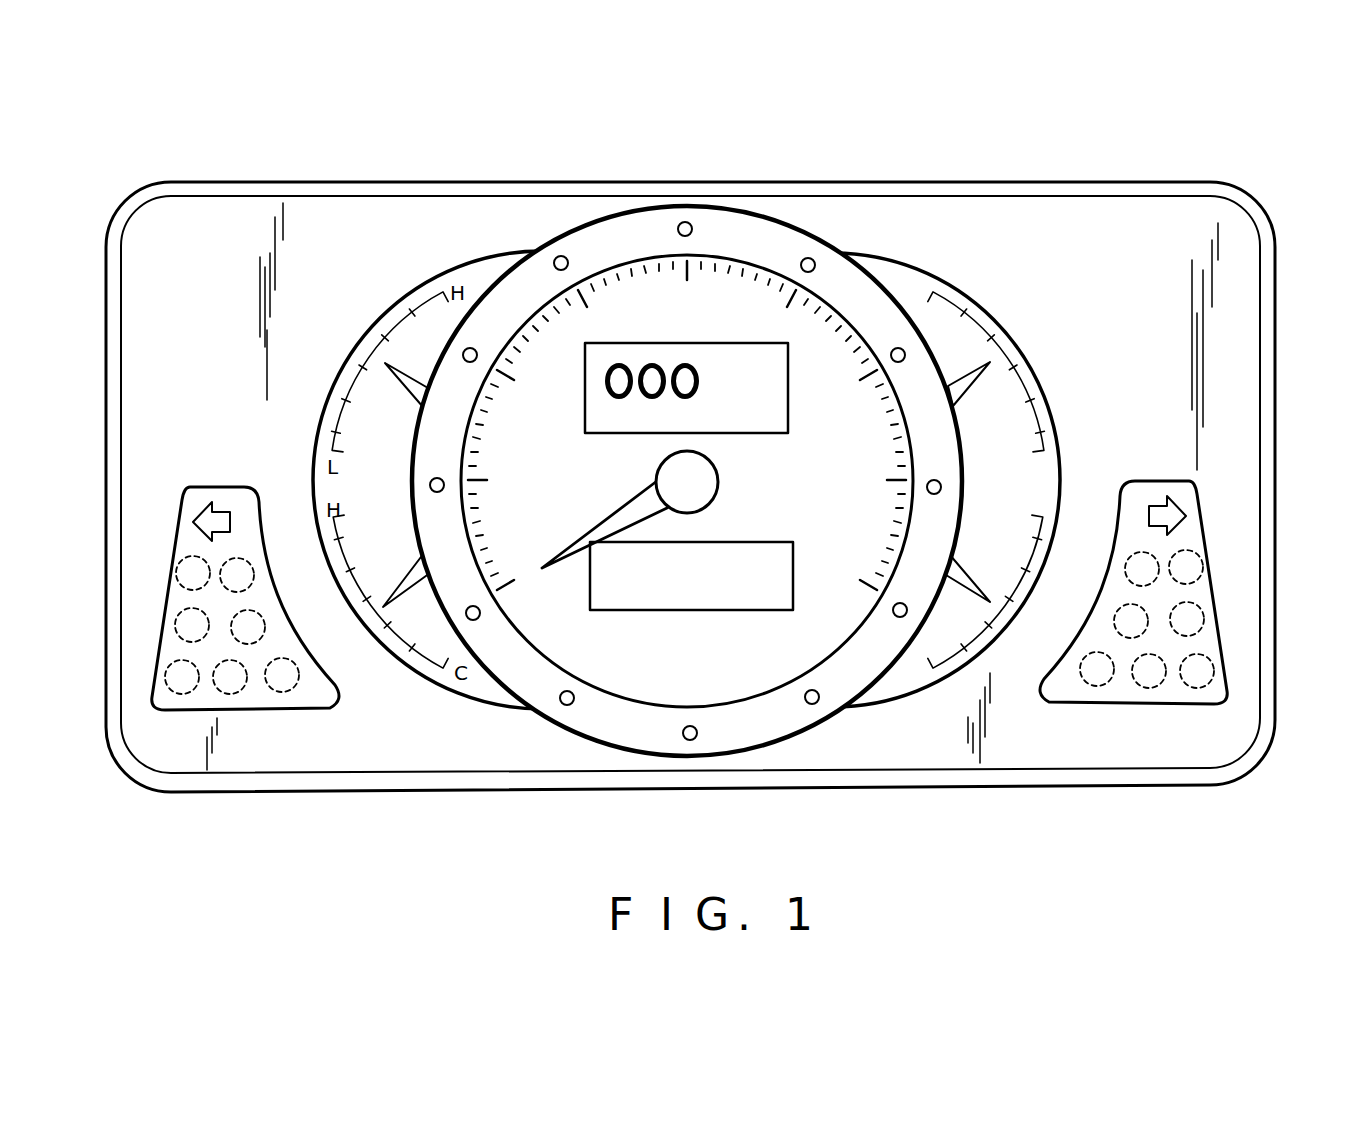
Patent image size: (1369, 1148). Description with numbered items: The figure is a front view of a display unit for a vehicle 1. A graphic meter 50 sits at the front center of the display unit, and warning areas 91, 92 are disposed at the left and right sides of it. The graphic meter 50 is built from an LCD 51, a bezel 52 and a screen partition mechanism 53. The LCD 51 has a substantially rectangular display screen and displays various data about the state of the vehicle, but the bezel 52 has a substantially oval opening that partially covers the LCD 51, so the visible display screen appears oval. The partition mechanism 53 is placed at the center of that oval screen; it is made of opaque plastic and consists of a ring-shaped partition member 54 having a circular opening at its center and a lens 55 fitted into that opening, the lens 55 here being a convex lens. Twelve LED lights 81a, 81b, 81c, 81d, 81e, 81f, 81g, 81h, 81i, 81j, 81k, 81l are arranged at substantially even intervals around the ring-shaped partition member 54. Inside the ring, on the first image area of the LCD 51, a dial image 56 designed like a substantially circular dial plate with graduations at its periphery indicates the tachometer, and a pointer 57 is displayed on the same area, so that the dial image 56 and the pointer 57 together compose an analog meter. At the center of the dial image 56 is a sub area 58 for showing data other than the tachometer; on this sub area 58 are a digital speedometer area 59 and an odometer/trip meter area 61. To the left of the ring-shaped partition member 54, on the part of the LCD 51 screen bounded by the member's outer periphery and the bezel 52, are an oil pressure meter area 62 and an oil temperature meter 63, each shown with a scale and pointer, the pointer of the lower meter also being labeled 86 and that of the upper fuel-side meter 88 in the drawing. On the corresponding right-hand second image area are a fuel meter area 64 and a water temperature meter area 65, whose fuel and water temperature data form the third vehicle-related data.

The display unit for a vehicle 1 is at (730, 174).
The graphic meter 50 is at (892, 300).
The LCD 51 is at (938, 352).
The bezel 52 is at (1080, 240).
The screen partition mechanism 53 is at (735, 715).
The ring-shaped partition member 54 is at (645, 730).
The lens 55 is at (550, 355).
The dial image 56 is at (672, 287).
The pointer 57 is at (567, 578).
The sub area 58 is at (765, 397).
The digital speedometer area 59 is at (700, 365).
The odometer/trip meter area 61 is at (760, 605).
The oil pressure meter area 62 is at (383, 333).
The oil temperature meter 63 is at (387, 633).
The fuel meter area 64 is at (1007, 378).
The water temperature meter area 65 is at (990, 607).
The LED light 81a is at (690, 741).
The LED light 81b is at (567, 706).
The LED light 81c is at (475, 621).
The LED light 81d is at (430, 486).
The LED light 81e is at (470, 347).
The LED light 81f is at (560, 255).
The LED light 81g is at (685, 222).
The LED light 81h is at (808, 257).
The LED light 81i is at (898, 348).
The LED light 81j is at (941, 487).
The LED light 81k is at (899, 618).
The LED light 81l is at (812, 705).
The right sub-gauge ring 86 is at (823, 353).
The fuel gauge needle 88 is at (973, 343).
The warning area 91 is at (172, 598).
The warning area 92 is at (1207, 595).